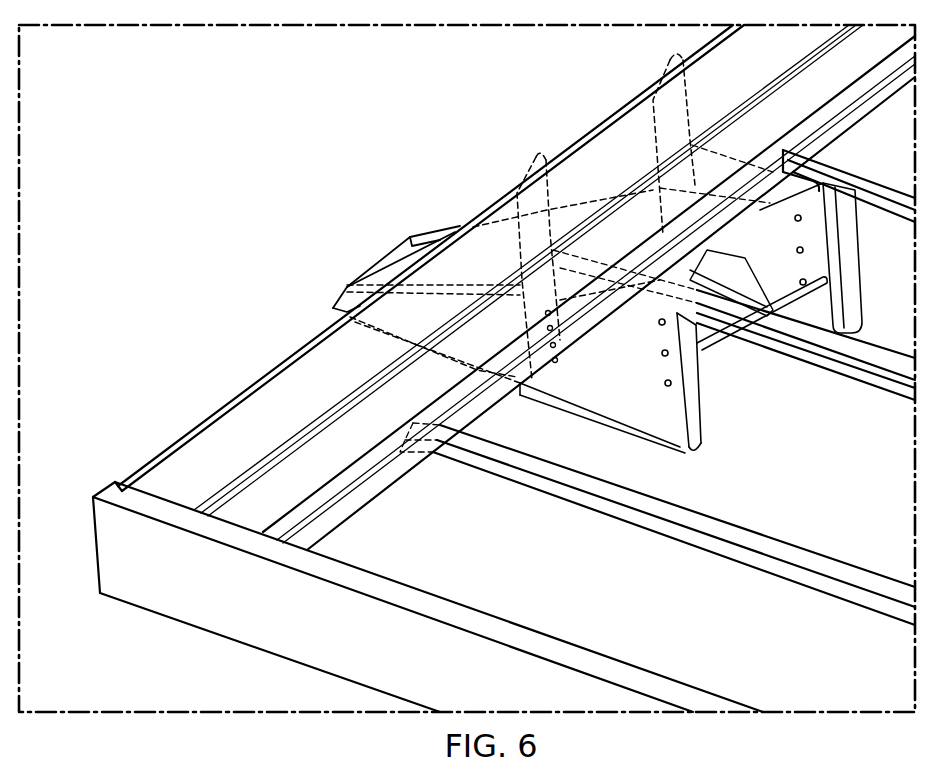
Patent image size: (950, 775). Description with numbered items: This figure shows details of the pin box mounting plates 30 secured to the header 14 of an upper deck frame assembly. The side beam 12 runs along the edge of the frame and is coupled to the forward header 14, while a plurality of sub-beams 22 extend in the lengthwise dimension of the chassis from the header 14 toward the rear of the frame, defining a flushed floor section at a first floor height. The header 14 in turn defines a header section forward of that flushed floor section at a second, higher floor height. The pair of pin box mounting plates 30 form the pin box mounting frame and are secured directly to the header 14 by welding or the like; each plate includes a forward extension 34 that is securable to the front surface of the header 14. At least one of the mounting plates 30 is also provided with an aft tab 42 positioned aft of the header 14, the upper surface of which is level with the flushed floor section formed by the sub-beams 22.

The side beam 12 is at (282, 633).
The header 14 is at (253, 413).
The sub-beam 22 is at (868, 359).
The pin box mounting plate 30 is at (650, 406).
The forward extension 34 is at (677, 56).
The aft tab 42 is at (772, 270).